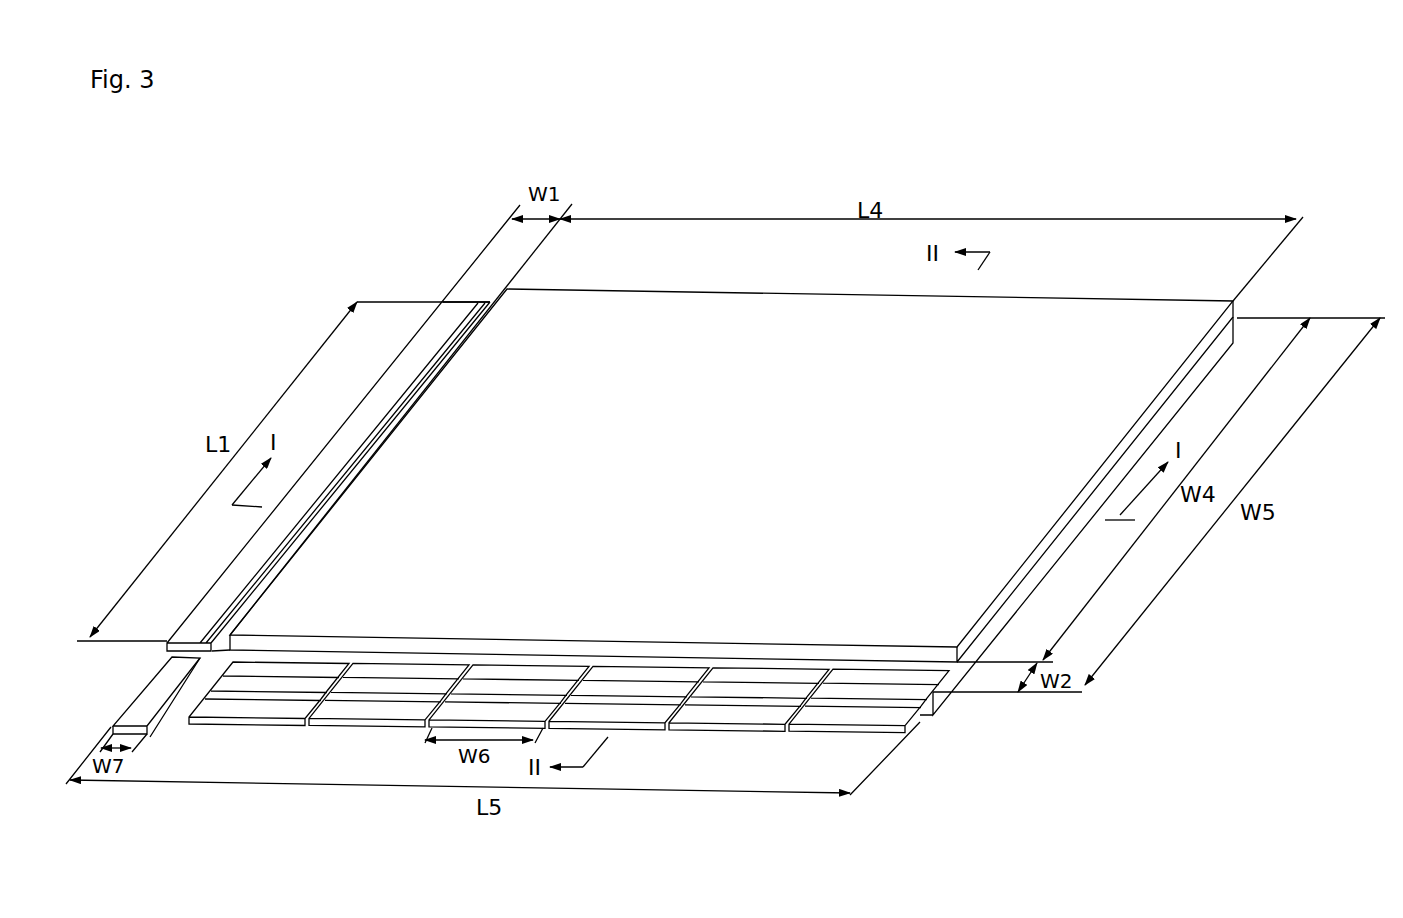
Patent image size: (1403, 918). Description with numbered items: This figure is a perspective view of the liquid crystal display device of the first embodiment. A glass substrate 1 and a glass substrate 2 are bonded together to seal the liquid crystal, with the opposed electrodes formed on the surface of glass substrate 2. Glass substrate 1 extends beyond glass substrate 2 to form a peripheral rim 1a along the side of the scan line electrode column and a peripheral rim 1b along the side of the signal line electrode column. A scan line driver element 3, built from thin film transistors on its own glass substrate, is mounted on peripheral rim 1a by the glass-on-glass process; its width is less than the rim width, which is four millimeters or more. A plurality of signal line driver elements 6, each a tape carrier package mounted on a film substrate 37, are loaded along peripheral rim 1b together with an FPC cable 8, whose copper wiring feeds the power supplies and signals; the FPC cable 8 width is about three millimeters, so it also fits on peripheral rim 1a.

The glass substrate 1 is at (1060, 545).
The peripheral rim 1a is at (590, 176).
The peripheral rim 1b is at (1113, 661).
The glass substrate 2 is at (1025, 568).
The scan line driver element 3 is at (376, 408).
The signal line driver element 6 is at (927, 712).
The FPC cable 8 is at (143, 710).
The film substrate 37 is at (896, 715).